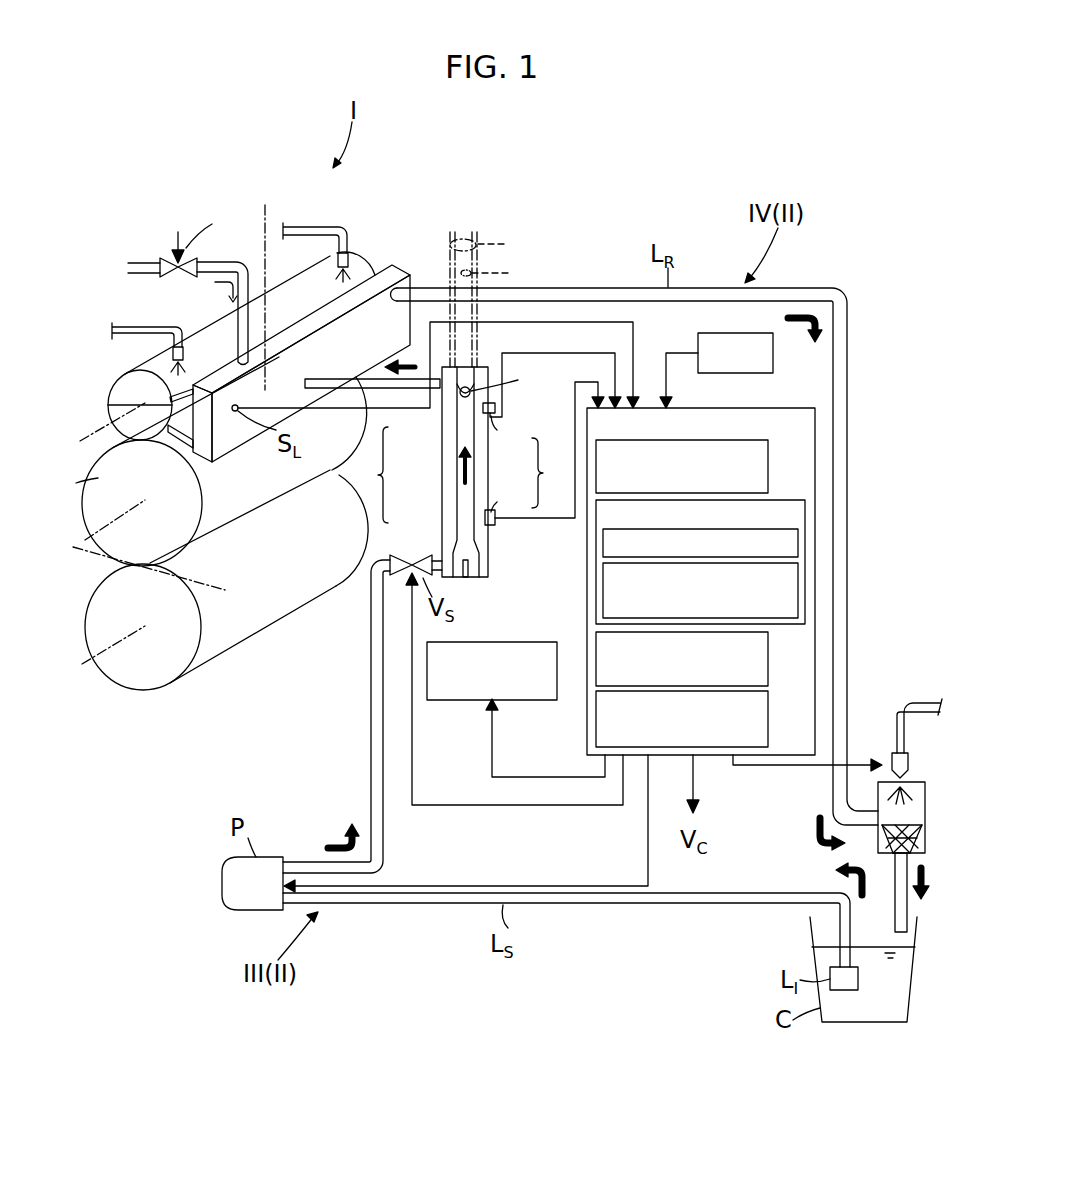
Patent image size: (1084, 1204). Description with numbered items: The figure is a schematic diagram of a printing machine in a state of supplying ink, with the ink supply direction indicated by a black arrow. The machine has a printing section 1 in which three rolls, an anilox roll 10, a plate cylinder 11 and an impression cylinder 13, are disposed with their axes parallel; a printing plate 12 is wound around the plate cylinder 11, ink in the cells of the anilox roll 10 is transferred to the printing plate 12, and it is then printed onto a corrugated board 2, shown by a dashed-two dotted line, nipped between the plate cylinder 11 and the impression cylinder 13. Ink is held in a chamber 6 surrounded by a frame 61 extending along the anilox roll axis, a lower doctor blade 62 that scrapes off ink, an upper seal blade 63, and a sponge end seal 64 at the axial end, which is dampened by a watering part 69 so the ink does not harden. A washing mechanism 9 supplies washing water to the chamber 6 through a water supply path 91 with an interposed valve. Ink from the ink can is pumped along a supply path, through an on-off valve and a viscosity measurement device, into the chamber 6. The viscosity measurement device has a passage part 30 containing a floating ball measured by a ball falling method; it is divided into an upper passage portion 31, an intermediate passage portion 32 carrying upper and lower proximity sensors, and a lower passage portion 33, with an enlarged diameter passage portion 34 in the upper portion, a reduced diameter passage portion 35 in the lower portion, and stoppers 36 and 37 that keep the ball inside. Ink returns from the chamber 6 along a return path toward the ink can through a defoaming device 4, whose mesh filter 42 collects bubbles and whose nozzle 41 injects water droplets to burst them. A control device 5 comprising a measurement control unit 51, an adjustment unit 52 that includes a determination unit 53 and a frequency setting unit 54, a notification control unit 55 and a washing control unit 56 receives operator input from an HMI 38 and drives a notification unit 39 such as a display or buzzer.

The printing section 1 is at (265, 670).
The corrugated board 2 is at (203, 579).
The defoaming device 4 is at (893, 803).
The control device 5 is at (743, 567).
The chamber 6 is at (265, 284).
The washing mechanism 9 is at (121, 227).
The anilox roll 10 is at (115, 402).
The plate cylinder 11 is at (100, 478).
The printing plate 12 is at (224, 461).
The impression cylinder 13 is at (160, 690).
The passage part 30 is at (484, 411).
The upper passage portion 31 is at (447, 402).
The intermediate passage portion 32 is at (447, 466).
The lower passage portion 33 is at (448, 549).
The enlarged diameter passage portion 34 is at (496, 408).
The reduced diameter passage portion 35 is at (489, 545).
The stopper 36 is at (469, 375).
The stopper 37 is at (478, 573).
The HMI 38 is at (742, 333).
The notification unit 39 is at (492, 642).
The nozzle 41 is at (906, 765).
The mesh filter 42 is at (920, 835).
The measurement control unit 51 is at (770, 468).
The adjustment unit 52 is at (806, 512).
The determination unit 53 is at (799, 545).
The frequency setting unit 54 is at (799, 590).
The notification control unit 55 is at (770, 660).
The washing control unit 56 is at (770, 720).
The frame 61 is at (393, 270).
The doctor blade 62 is at (200, 445).
The seal blade 63 is at (185, 394).
The end seal 64 is at (177, 408).
The watering part 69 is at (173, 355).
The water supply path 91 is at (221, 262).